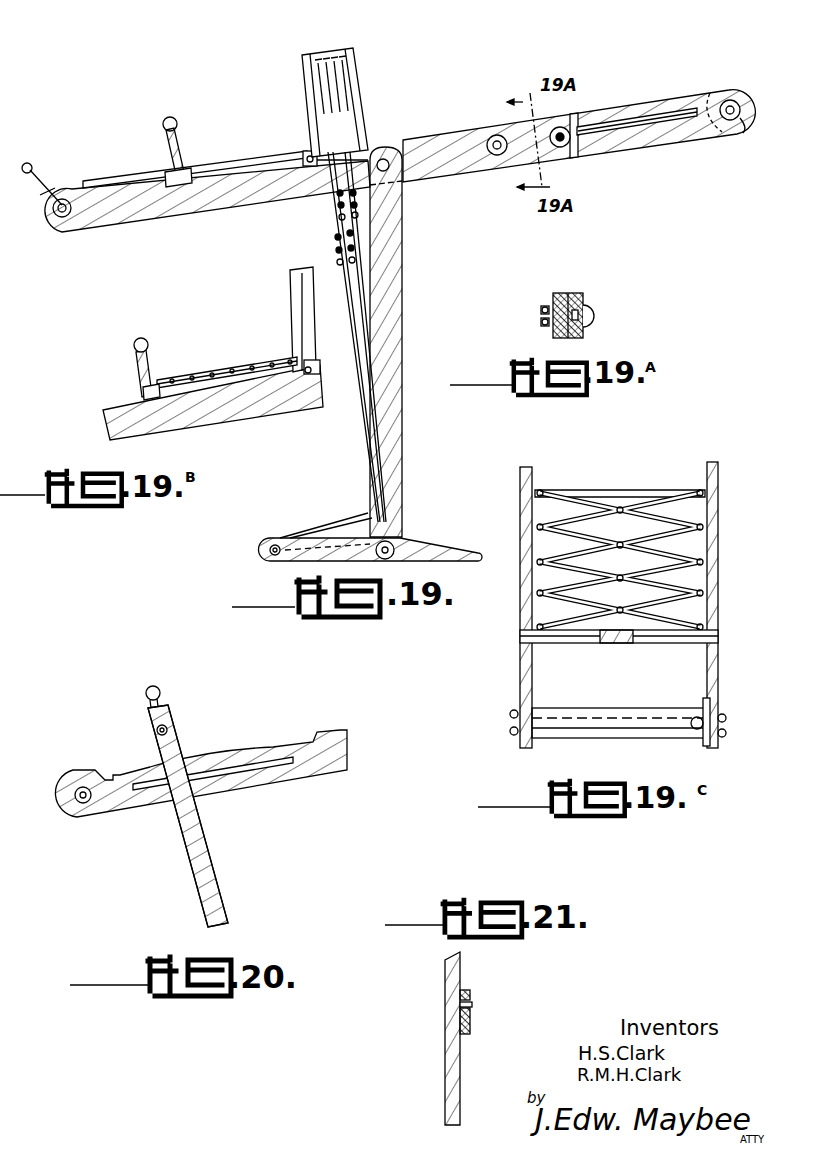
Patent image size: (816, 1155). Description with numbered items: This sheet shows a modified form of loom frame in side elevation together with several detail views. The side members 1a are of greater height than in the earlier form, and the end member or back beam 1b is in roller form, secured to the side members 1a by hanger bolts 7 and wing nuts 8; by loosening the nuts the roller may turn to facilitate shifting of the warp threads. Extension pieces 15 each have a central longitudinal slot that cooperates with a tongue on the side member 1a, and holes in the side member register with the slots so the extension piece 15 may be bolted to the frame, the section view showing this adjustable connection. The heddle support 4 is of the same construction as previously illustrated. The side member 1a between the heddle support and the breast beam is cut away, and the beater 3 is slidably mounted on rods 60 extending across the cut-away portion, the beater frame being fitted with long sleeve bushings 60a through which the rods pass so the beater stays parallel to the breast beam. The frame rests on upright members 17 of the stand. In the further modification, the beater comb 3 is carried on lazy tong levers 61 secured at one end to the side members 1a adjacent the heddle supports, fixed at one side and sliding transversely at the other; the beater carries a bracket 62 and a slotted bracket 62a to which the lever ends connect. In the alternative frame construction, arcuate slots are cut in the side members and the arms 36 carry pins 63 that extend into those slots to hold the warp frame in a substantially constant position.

In FIG. 19, the side member 1a is at (462, 140).
In FIG. 19A, the side member 1a is at (552, 300).
In FIG. 21, the side member 1a is at (472, 1023).
In FIG. 19, the end member or back beam 1b is at (710, 92).
In FIG. 19B, the beater 3 is at (150, 365).
In FIG. 20, the beater 3 is at (161, 697).
In FIG. 19, the heddle support 4 is at (360, 97).
In FIG. 19, the hanger bolt 7 is at (735, 105).
In FIG. 19, the nut 8 is at (743, 133).
In FIG. 19, the extension piece 15 is at (617, 110).
In FIG. 19A, the extension piece 15 is at (585, 298).
In FIG. 19, the upright member 17 is at (395, 307).
In FIG. 20, the arm 36 is at (204, 848).
In FIG. 21, the arm 36 is at (445, 980).
In FIG. 19, the rod 60 is at (236, 163).
In FIG. 19, the sleeve bushing 60a is at (187, 170).
In FIG. 19B, the lazy tong lever 61 is at (217, 365).
In FIG. 19C, the lazy tong lever 61 is at (683, 535).
In FIG. 19C, the bracket 62 is at (533, 620).
In FIG. 19B, the slotted bracket 62a is at (163, 387).
In FIG. 19C, the slotted bracket 62a is at (717, 623).
In FIG. 20, the pin 63 is at (172, 752).
In FIG. 21, the pin 63 is at (471, 998).